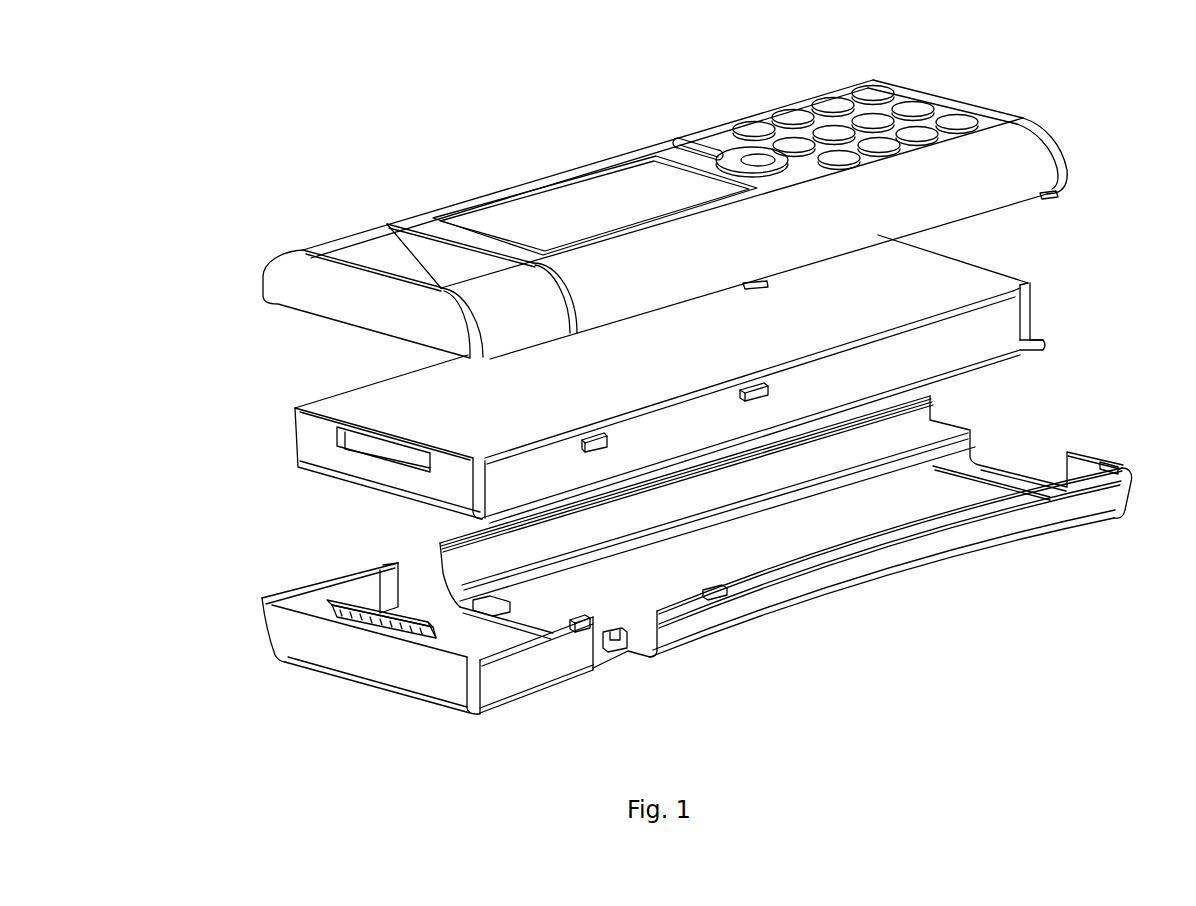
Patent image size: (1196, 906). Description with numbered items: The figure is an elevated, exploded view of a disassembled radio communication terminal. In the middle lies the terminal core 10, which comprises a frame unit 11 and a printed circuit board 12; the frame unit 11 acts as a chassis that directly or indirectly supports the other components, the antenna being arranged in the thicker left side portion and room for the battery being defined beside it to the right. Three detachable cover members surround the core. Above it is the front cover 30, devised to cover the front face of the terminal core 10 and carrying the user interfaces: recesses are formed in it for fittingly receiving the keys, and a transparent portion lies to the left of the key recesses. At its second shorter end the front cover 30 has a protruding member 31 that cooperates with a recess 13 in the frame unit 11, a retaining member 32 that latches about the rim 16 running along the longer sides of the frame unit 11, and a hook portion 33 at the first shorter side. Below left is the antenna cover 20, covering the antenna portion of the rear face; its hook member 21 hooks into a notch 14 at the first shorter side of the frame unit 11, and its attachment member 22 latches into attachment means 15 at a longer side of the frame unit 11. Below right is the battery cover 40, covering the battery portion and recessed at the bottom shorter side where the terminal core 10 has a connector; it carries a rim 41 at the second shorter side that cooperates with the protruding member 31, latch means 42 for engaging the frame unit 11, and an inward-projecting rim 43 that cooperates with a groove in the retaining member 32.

The terminal core 10 is at (667, 379).
The frame unit 11 is at (984, 356).
The printed circuit board 12 is at (977, 280).
The recess 13 is at (1027, 320).
The notch 14 is at (335, 435).
The attachment means 15 is at (597, 452).
The rim 16 is at (763, 389).
The antenna cover 20 is at (395, 638).
The hook member 21 is at (342, 614).
The attachment member 22 is at (585, 625).
The front cover 30 is at (664, 225).
The protruding member 31 is at (1048, 193).
The retaining member 32 is at (745, 283).
The hook portion 33 is at (360, 330).
The battery cover 40 is at (816, 558).
The rim 41 is at (1107, 468).
The latch means 42 is at (610, 645).
The rim 43 is at (720, 586).